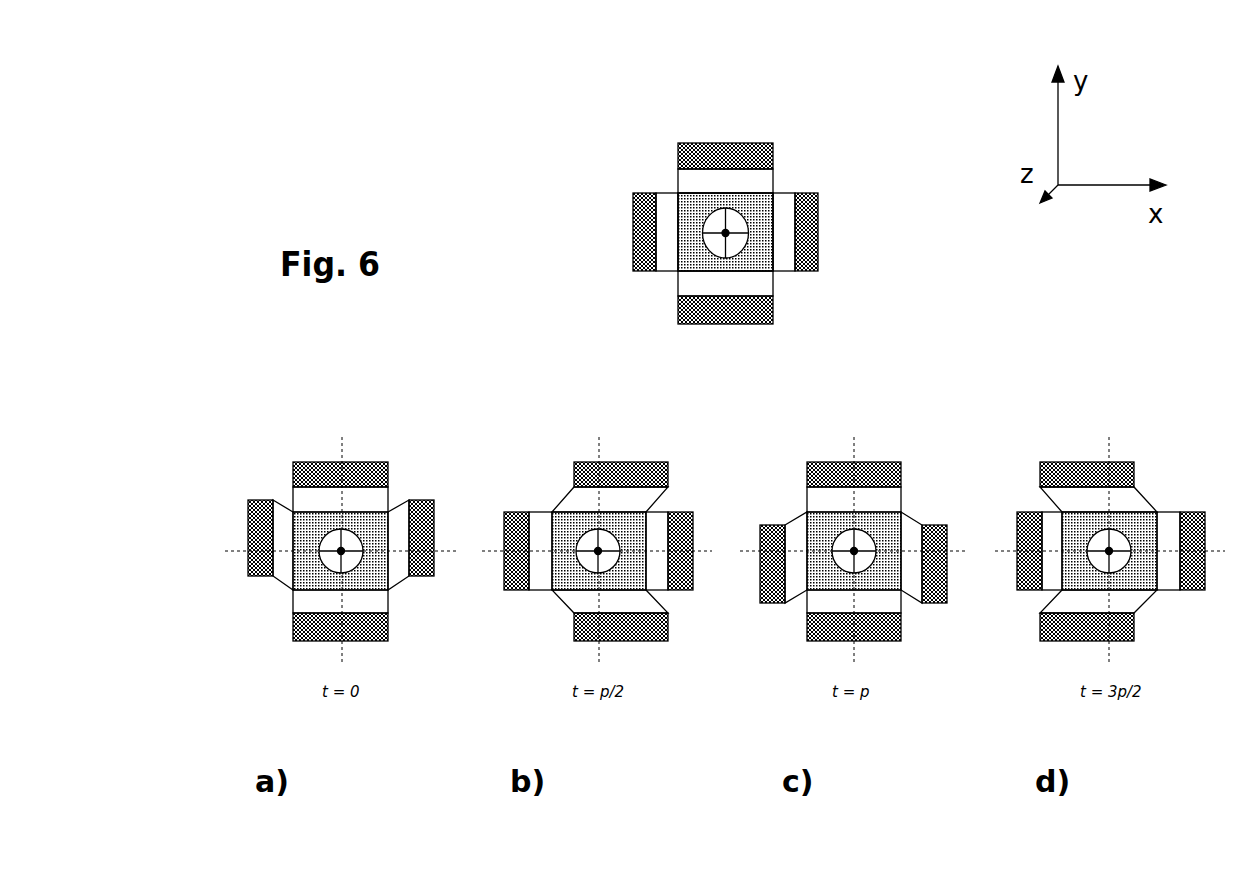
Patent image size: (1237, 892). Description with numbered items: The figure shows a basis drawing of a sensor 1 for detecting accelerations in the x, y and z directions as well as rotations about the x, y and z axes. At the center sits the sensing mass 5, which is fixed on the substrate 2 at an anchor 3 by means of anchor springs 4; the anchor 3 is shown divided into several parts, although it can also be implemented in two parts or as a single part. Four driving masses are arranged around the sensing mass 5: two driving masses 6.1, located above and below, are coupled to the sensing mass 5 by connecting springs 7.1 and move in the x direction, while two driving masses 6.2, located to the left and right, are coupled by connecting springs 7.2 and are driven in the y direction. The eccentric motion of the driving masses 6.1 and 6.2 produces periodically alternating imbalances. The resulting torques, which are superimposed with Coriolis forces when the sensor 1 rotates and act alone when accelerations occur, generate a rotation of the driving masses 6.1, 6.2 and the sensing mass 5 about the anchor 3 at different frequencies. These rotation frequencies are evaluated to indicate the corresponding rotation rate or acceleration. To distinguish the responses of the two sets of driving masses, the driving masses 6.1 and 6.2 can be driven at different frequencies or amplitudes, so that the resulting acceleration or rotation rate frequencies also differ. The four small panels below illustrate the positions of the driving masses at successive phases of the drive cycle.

The sensor 1 is at (585, 240).
The substrate 2 is at (862, 290).
The anchor 3 is at (737, 220).
The anchor springs 4 is at (727, 230).
The sensing mass 5 is at (760, 257).
The driving masses 6.1 is at (697, 153).
The driving masses 6.2 is at (643, 215).
The connecting springs 7.1 is at (678, 173).
The connecting springs 7.2 is at (670, 192).